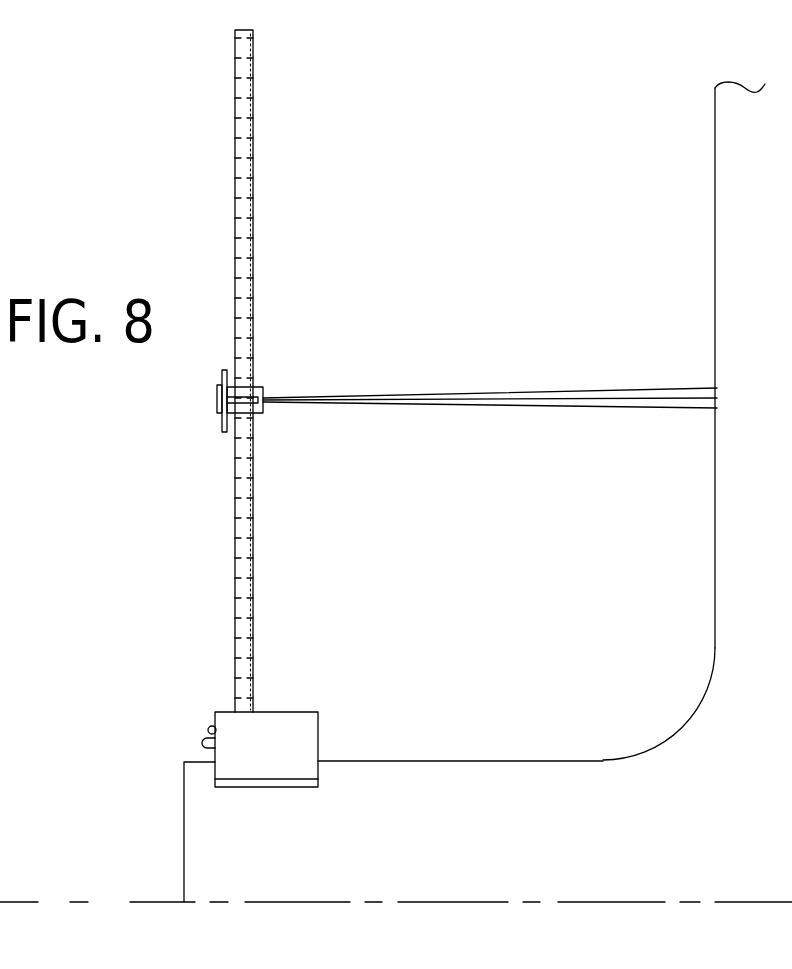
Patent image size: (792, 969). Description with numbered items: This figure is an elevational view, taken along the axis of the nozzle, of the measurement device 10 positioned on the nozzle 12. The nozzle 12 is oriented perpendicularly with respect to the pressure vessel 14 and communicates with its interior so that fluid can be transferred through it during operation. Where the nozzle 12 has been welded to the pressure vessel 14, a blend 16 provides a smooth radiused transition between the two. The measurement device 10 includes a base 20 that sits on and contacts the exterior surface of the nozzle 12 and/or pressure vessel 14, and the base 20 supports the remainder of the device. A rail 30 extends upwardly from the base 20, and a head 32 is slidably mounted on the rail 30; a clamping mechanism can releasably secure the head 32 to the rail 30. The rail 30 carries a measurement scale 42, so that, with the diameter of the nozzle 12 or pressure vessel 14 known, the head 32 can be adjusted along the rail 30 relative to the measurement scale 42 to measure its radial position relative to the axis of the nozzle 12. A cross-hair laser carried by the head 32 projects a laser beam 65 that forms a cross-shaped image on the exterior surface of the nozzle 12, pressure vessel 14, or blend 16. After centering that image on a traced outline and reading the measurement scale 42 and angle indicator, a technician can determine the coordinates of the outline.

The measurement device 10 is at (175, 225).
The nozzle 12 is at (395, 790).
The pressure vessel 14 is at (767, 351).
The blend 16 is at (690, 718).
The base 20 is at (300, 712).
The rail 30 is at (250, 371).
The head 32 is at (205, 423).
The measurement scale 42 is at (258, 588).
The laser beam 65 is at (620, 392).